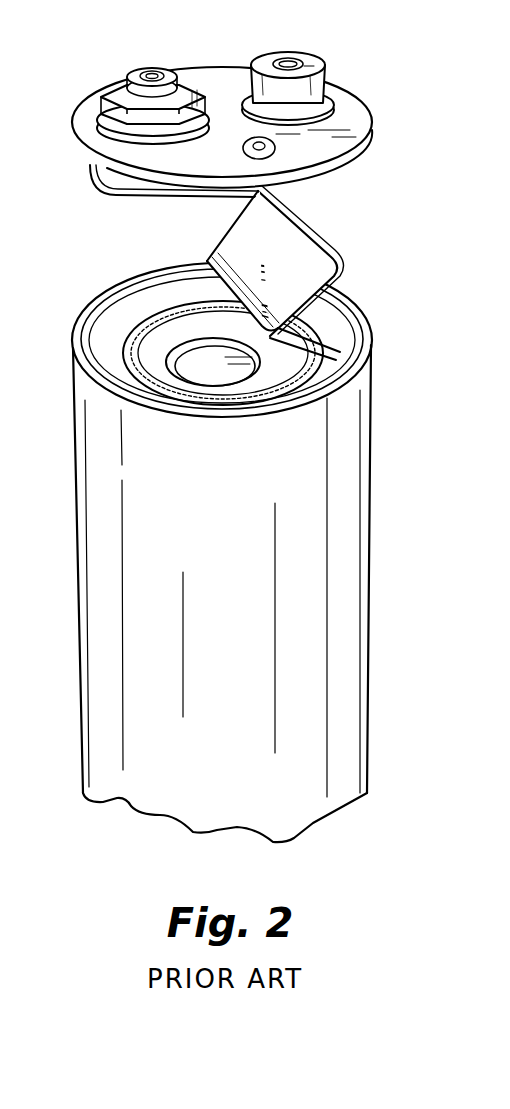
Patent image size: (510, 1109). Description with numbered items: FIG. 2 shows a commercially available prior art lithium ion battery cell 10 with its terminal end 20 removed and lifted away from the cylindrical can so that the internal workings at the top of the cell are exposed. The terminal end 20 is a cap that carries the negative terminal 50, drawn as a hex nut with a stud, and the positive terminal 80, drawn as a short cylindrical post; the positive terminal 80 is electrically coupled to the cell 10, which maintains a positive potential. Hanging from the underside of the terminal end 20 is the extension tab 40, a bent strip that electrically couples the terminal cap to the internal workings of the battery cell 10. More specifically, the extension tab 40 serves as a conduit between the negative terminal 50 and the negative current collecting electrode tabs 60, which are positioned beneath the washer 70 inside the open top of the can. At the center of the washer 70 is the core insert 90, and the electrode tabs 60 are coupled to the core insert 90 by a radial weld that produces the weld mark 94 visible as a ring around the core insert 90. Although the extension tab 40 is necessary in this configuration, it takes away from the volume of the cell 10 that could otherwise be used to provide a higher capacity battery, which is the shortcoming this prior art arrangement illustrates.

The battery cell 10 is at (424, 196).
The terminal end 20 is at (362, 100).
The extension tab 40 is at (342, 272).
The negative terminal 50 is at (113, 78).
The negative current collecting electrode tabs 60 is at (110, 330).
The washer 70 is at (140, 363).
The positive terminal 80 is at (313, 58).
The core insert 90 is at (203, 375).
The weld mark 94 is at (118, 372).